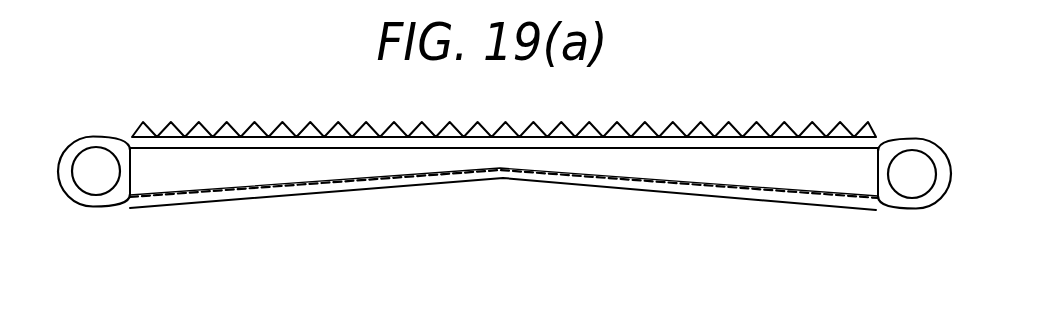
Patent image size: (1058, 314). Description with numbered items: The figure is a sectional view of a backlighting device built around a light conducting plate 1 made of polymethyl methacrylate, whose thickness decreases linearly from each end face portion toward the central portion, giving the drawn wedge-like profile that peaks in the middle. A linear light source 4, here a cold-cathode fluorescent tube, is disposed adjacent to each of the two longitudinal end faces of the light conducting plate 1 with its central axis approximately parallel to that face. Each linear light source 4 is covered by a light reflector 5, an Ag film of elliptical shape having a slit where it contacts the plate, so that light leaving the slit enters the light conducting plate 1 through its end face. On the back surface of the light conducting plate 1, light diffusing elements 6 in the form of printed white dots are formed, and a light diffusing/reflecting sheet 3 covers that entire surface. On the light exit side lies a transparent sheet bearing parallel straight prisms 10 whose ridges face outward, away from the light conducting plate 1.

The light conducting plate 1 is at (678, 155).
The prisms 10 is at (353, 137).
The light diffusing elements 6 is at (713, 185).
The light diffusing/reflecting sheet 3 is at (343, 193).
The light reflector 5 is at (95, 207).
The linear light source 4 is at (91, 158).